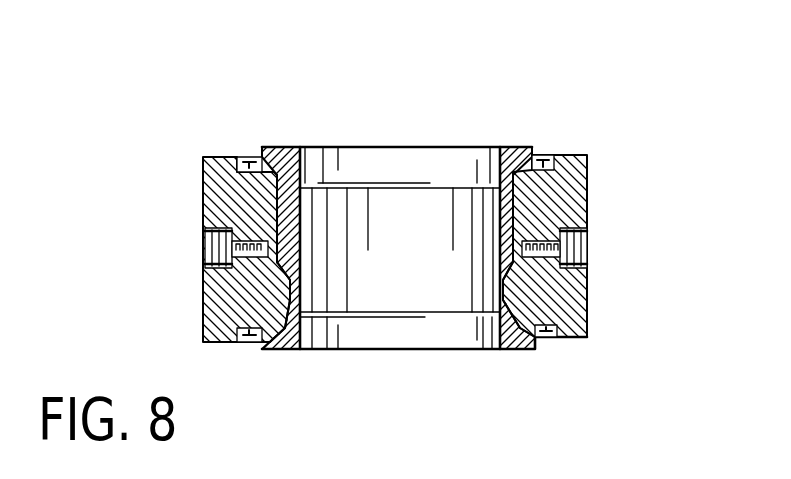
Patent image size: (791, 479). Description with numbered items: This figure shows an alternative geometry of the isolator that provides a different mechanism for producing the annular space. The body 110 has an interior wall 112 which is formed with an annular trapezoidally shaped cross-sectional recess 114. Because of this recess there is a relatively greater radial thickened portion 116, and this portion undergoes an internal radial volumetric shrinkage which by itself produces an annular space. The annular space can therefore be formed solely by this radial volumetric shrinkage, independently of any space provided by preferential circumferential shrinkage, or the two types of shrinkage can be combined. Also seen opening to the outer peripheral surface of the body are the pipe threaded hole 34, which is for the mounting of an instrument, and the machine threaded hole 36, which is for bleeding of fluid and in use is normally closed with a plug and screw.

The pipe threaded hole 34 is at (205, 244).
The machine threaded hole 36 is at (586, 246).
The body 110 is at (583, 186).
The interior wall 112 is at (586, 217).
The annular trapezoidally shaped cross-sectional recess 114 is at (586, 277).
The radial thickened portion 116 is at (304, 259).